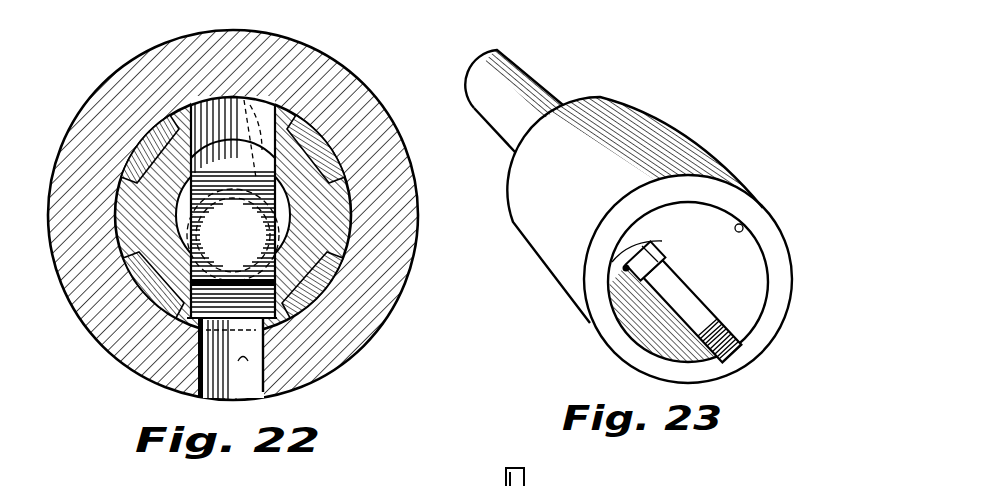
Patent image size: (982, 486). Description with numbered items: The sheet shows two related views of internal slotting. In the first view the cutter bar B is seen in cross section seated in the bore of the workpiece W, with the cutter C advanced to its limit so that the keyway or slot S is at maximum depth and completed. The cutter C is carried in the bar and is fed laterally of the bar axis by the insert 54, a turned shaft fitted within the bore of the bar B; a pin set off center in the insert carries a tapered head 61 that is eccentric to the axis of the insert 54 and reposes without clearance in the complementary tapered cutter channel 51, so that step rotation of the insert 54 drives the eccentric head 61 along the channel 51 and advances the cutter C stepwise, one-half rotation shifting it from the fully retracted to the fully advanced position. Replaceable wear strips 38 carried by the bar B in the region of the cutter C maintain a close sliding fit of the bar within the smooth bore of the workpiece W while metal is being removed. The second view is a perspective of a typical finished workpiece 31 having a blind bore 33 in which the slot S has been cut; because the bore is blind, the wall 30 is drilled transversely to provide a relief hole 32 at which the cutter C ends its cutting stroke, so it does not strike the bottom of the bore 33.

In FIG. 22, the cutter bar B is at (340, 200).
In FIG. 22, the cutter C is at (280, 323).
In FIG. 22, the replaceable wear strips 38 is at (147, 148).
In FIG. 22, the insert 54 is at (292, 218).
In FIG. 22, the tapered head 61 is at (258, 139).
In FIG. 22, the cutter channel 51 is at (247, 133).
In FIG. 22, the keyway or slot S is at (247, 361).
In FIG. 23, the keyway or slot S is at (745, 348).
In FIG. 23, the workpiece W is at (549, 253).
In FIG. 23, the workpiece 31 is at (675, 133).
In FIG. 23, the wall 30 is at (677, 192).
In FIG. 23, the relief hole 32 is at (647, 248).
In FIG. 23, the bore 33 is at (743, 227).